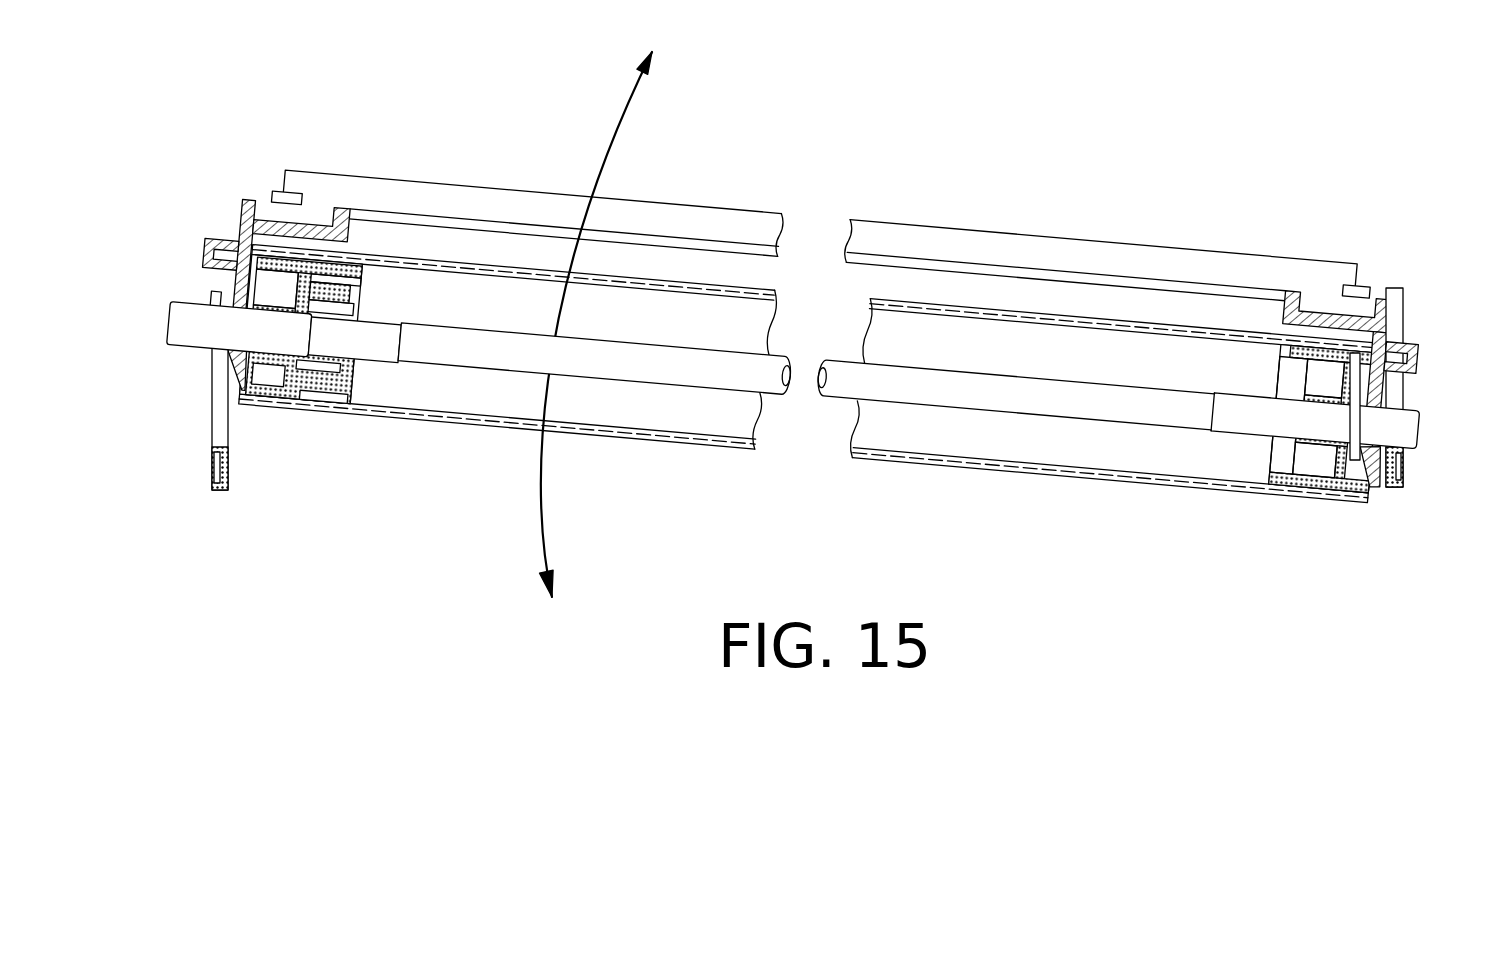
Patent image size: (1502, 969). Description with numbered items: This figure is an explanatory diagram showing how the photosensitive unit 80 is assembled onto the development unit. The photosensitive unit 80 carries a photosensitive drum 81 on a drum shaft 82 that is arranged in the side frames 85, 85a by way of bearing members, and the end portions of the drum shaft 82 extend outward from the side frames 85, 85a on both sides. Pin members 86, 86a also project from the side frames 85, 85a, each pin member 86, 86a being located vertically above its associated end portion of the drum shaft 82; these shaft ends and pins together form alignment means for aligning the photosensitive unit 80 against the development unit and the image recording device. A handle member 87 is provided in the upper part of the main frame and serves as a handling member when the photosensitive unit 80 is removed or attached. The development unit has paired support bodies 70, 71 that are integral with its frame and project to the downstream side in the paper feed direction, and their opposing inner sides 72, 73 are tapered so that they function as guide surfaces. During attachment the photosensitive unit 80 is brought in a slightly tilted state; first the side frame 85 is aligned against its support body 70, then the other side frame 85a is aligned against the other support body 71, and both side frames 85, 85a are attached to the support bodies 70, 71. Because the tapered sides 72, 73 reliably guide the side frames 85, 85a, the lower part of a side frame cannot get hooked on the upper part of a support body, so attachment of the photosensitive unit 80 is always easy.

The support body 70 is at (1393, 490).
The support body 71 is at (228, 493).
The tapered inner side 72 is at (1403, 320).
The tapered inner side 73 is at (222, 293).
The photosensitive unit 80 is at (1052, 182).
The photosensitive drum 81 is at (1000, 480).
The drum shaft 82 is at (1160, 410).
The side frame 85 is at (1386, 300).
The side frame 85a is at (242, 220).
The pin member 86 is at (1422, 362).
The pin member 86a is at (222, 242).
The handle member 87 is at (1172, 243).